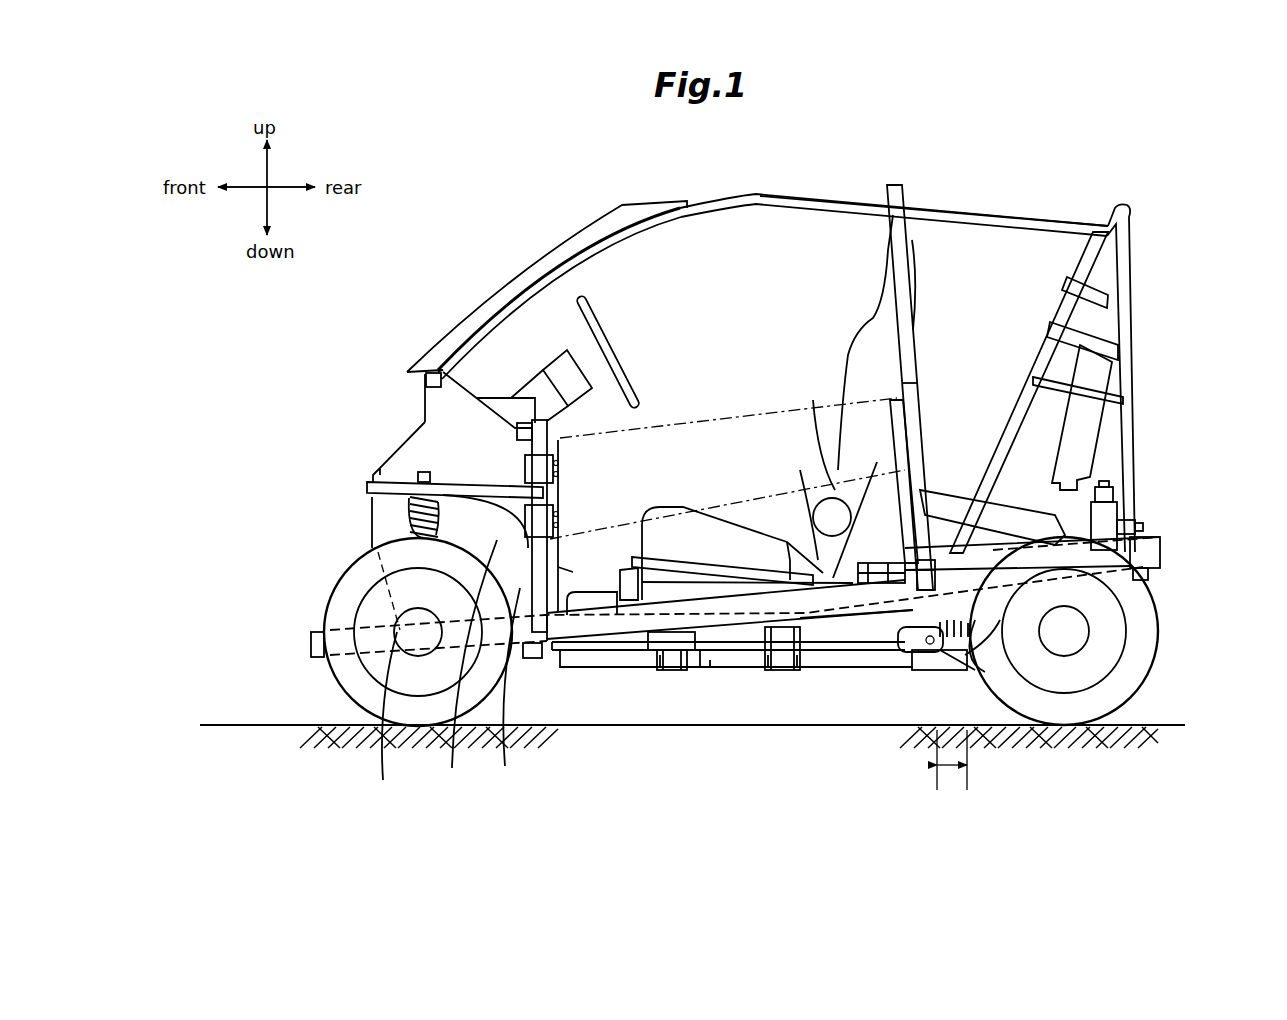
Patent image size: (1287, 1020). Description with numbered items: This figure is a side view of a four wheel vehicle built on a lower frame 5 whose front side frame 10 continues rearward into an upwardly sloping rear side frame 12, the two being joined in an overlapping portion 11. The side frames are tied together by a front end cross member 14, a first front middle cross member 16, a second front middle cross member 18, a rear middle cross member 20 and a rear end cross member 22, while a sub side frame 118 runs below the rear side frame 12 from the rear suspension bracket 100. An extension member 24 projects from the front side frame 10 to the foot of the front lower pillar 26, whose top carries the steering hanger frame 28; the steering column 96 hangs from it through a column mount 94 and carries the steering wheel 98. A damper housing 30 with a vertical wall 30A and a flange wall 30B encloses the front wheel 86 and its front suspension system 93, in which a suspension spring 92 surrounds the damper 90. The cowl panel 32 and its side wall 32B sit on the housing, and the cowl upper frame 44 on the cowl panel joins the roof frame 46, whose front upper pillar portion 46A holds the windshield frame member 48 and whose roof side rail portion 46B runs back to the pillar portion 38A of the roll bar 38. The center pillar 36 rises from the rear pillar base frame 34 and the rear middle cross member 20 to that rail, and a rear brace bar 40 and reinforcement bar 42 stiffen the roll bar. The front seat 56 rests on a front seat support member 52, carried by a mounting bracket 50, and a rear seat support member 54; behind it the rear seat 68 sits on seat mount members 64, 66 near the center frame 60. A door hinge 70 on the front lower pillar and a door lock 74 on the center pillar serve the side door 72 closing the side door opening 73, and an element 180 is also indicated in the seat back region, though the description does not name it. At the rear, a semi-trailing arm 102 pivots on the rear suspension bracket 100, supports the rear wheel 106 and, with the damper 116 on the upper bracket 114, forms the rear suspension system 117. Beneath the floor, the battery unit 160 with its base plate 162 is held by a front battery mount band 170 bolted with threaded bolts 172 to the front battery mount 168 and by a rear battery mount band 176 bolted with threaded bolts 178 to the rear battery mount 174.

The lower frame 5 is at (822, 635).
The front side frame 10 is at (592, 633).
The overlapping portion 11 is at (957, 772).
The rear side frame 12 is at (1155, 549).
The front end cross member 14 is at (311, 645).
The first front middle cross member 16 is at (383, 718).
The second front middle cross member 18 is at (530, 660).
The rear middle cross member 20 is at (960, 540).
The rear end cross member 22 is at (1150, 576).
The extension member 24 is at (553, 642).
The front lower pillar 26 is at (573, 568).
The steering hanger frame 28 is at (548, 428).
The damper housing 30 is at (467, 667).
The vertical wall 30A is at (507, 690).
The flange wall 30B is at (463, 492).
The cowl panel 32 is at (420, 447).
The side wall 32B is at (440, 412).
The rear pillar base frame 34 is at (905, 642).
The center pillar 36 is at (905, 308).
The roll bar 38 is at (1022, 408).
The pillar portion 38A is at (1060, 345).
The rear brace bar 40 is at (1131, 425).
The reinforcement bar 42 is at (1090, 392).
The cowl upper frame 44 is at (432, 373).
The roof frame 46 is at (757, 192).
The front upper pillar portion 46A is at (592, 238).
The roof side rail portion 46B is at (848, 222).
The windshield frame member 48 is at (492, 298).
The mounting bracket 50 is at (627, 600).
The front seat support member 52 is at (632, 588).
The rear seat support member 54 is at (763, 597).
The front seat 56 is at (710, 505).
The center frame 60 is at (983, 533).
The seat mount member 64 is at (940, 547).
The seat mount member 66 is at (1113, 493).
The rear seat 68 is at (1022, 500).
The door hinge 70 is at (535, 470).
The side door 72 is at (742, 413).
The side door opening 73 is at (763, 273).
The door lock 74 is at (903, 428).
The front wheel 86 is at (345, 590).
The damper 90 is at (405, 522).
The suspension spring 92 is at (395, 495).
The front suspension system 93 is at (398, 532).
The column mount 94 is at (500, 406).
The steering column 96 is at (558, 368).
The steering wheel 98 is at (588, 312).
The rear suspension bracket 100 is at (910, 655).
The semi-trailing arm 102 is at (965, 655).
The rear wheel 106 is at (1130, 683).
The upper bracket 114 is at (1140, 528).
The damper 116 is at (1110, 528).
The rear suspension system 117 is at (985, 672).
The sub side frame 118 is at (938, 668).
The battery unit 160 is at (700, 672).
The base plate 162 is at (710, 670).
The front battery mount 168 is at (667, 640).
The front battery mount band 170 is at (670, 672).
The threaded bolt 172 is at (687, 670).
The rear battery mount 174 is at (773, 597).
The rear battery mount band 176 is at (785, 672).
The threaded bolt 178 is at (770, 672).
The seat back pivot 180 is at (877, 542).